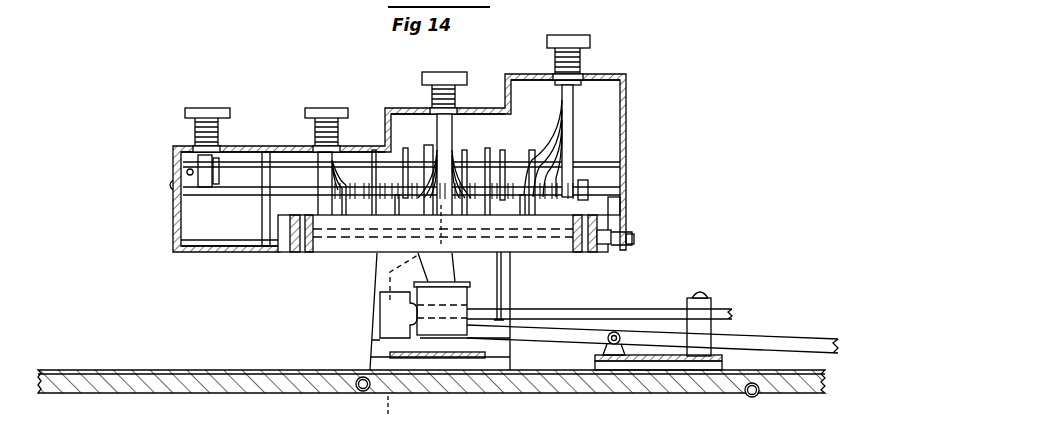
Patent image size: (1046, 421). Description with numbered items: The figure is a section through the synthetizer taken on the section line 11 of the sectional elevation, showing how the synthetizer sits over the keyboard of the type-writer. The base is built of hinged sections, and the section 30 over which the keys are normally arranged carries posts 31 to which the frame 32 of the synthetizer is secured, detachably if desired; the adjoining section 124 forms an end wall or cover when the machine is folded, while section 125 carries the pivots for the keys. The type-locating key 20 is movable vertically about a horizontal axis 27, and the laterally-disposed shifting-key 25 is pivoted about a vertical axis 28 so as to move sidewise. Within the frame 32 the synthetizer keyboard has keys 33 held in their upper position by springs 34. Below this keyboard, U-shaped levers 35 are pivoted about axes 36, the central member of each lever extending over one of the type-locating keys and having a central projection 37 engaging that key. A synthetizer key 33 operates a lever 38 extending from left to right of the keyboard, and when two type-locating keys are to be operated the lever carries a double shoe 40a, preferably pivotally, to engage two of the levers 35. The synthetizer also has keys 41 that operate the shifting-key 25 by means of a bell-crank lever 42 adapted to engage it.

The section line 11 is at (448, 52).
The type-locating key 20 is at (425, 310).
The type-box-shifting key 25 is at (584, 314).
The horizontal axis 27 is at (602, 343).
The vertical axis 28 is at (709, 298).
The base section 30 is at (523, 394).
The post 31 is at (371, 349).
The synthetizer frame 32 is at (627, 152).
The synthetizer key 33 is at (305, 112).
The spring 34 is at (316, 129).
The U-shaped lever 35 is at (552, 247).
The axis 36 is at (630, 240).
The central projection 37 is at (422, 276).
The lever 38 is at (508, 182).
The double shoe 40a is at (343, 217).
The synthetizer shifting key 41 is at (208, 118).
The bell-crank lever 42 is at (254, 166).
The base section 124 is at (153, 380).
The base section 125 is at (797, 394).